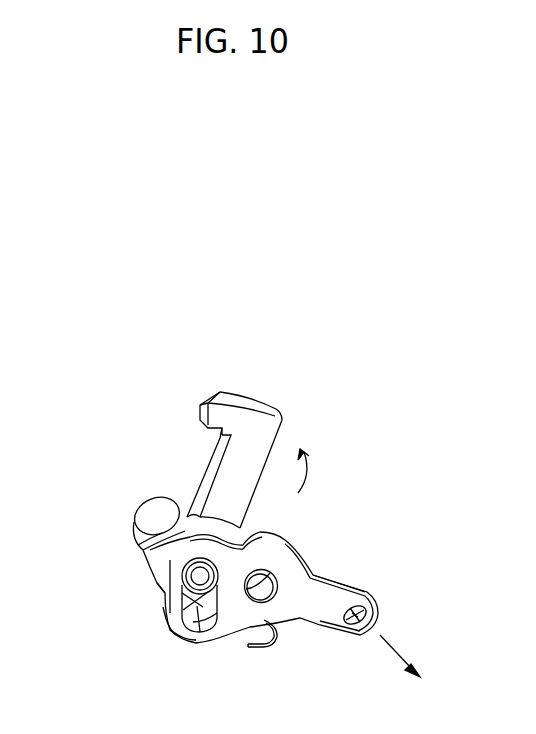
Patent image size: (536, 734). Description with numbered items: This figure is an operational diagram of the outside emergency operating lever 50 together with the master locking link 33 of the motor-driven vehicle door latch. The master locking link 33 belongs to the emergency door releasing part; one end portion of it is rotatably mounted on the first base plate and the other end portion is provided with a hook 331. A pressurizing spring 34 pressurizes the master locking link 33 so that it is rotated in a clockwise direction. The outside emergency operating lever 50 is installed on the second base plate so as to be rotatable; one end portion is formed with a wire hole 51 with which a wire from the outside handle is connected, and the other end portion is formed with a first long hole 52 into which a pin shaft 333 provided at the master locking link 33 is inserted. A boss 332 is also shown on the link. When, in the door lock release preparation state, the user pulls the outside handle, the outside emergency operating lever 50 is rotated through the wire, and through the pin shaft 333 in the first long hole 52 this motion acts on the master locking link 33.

The master locking link 33 is at (211, 445).
The hook 331 is at (208, 400).
The boss 332 is at (147, 510).
The pin shaft 333 is at (163, 590).
The pressurizing spring 34 is at (258, 652).
The outside emergency operating lever 50 is at (259, 622).
The wire hole 51 is at (357, 612).
The first long hole 52 is at (203, 625).